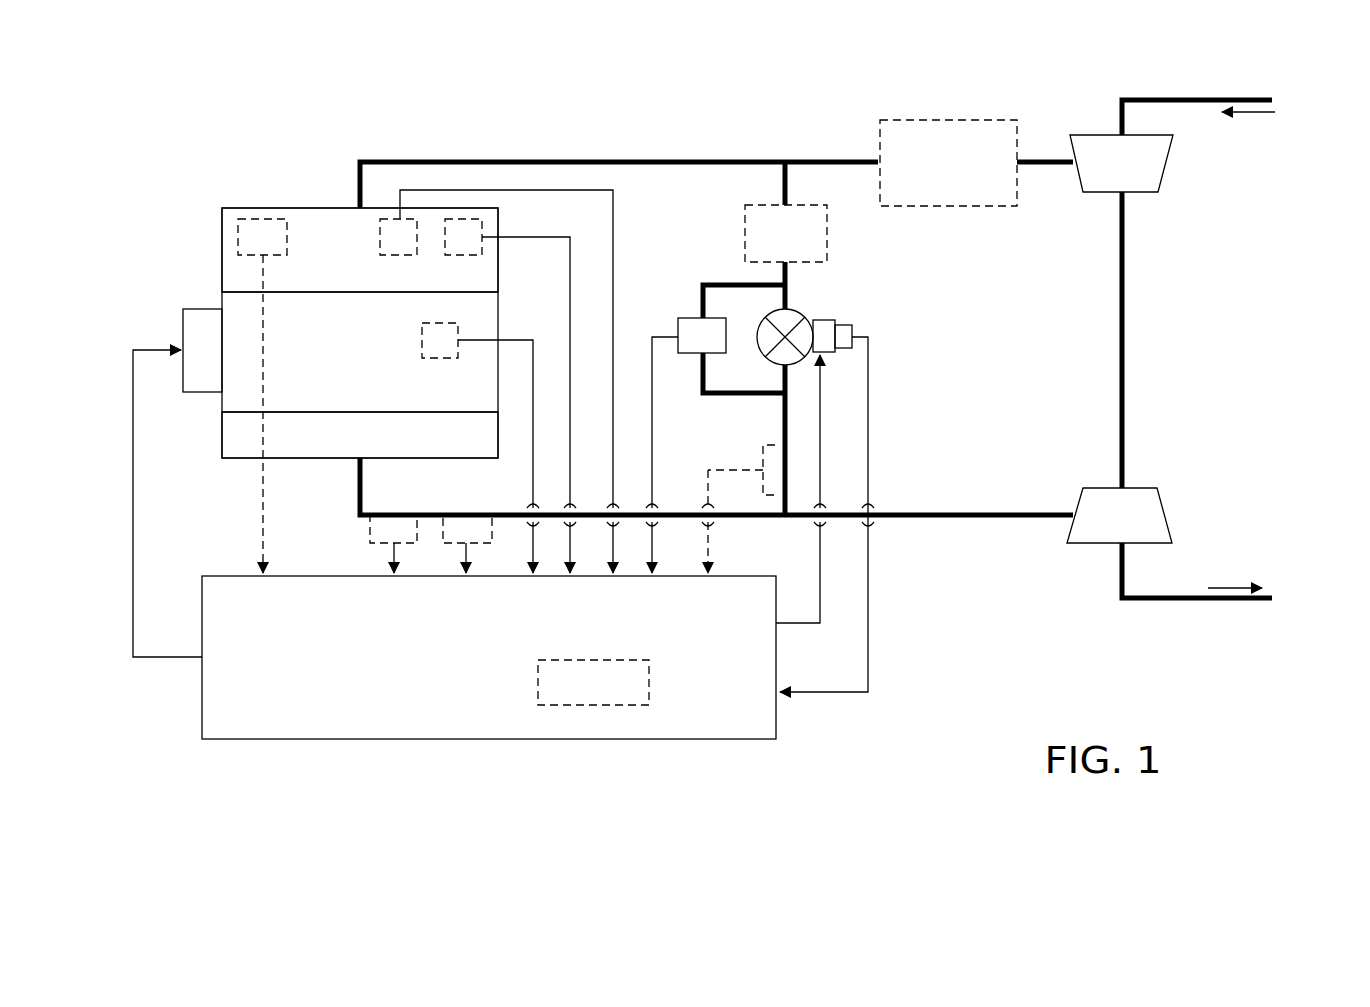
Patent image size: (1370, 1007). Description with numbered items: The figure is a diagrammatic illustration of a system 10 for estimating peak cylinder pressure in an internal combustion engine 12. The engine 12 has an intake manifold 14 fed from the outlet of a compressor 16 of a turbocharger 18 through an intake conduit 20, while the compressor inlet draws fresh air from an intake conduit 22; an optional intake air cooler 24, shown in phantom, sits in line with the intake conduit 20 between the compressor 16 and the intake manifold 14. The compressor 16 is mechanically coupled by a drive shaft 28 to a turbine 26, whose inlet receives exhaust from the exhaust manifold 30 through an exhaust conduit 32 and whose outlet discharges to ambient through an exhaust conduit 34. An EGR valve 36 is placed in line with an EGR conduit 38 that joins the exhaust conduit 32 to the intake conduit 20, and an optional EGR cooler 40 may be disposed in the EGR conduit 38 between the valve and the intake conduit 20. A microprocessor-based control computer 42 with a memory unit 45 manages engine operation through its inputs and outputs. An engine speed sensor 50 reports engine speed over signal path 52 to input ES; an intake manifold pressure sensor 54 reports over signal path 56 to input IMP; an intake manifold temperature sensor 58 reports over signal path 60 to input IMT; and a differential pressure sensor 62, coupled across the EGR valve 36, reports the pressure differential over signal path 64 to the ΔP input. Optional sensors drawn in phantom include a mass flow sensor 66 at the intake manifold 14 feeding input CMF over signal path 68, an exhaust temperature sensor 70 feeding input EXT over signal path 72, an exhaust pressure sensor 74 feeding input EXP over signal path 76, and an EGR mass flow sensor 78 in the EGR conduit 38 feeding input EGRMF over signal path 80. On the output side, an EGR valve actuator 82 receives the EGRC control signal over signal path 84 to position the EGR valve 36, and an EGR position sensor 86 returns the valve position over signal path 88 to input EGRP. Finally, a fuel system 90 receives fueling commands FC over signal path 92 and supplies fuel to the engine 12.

The system 10 is at (232, 144).
The internal combustion engine 12 is at (222, 298).
The intake manifold 14 is at (322, 208).
The compressor 16 is at (1165, 176).
The turbocharger 18 is at (1152, 304).
The intake conduit 20 is at (664, 162).
The intake conduit 22 is at (1168, 102).
The intake air cooler 24 is at (967, 206).
The turbine 26 is at (1168, 520).
The drive shaft 28 is at (1120, 342).
The exhaust manifold 30 is at (250, 458).
The exhaust conduit 32 is at (972, 515).
The exhaust conduit 34 is at (1152, 600).
The EGR valve 36 is at (790, 312).
The EGR conduit 38 is at (781, 405).
The EGR cooler 40 is at (827, 216).
The control computer 42 is at (423, 739).
The memory unit 45 is at (538, 674).
The engine speed sensor 50 is at (442, 359).
The signal path 52 is at (533, 462).
The intake manifold pressure sensor 54 is at (482, 222).
The signal path 56 is at (543, 238).
The intake manifold temperature sensor 58 is at (380, 228).
The signal path 60 is at (614, 230).
The differential pressure sensor 62 is at (688, 318).
The signal path 64 is at (656, 337).
The mass flow sensor 66 is at (238, 236).
The signal path 68 is at (265, 505).
The engine exhaust temperature sensor 70 is at (370, 528).
The signal path 72 is at (386, 555).
The engine exhaust pressure sensor 74 is at (443, 546).
The signal path 76 is at (474, 548).
The mass flow sensor 78 is at (760, 466).
The signal path 80 is at (706, 488).
The EGR valve actuator 82 is at (824, 320).
The signal path 84 is at (822, 402).
The EGR position sensor 86 is at (853, 333).
The signal path 88 is at (870, 388).
The fuel system 90 is at (211, 392).
The signal path 92 is at (134, 500).